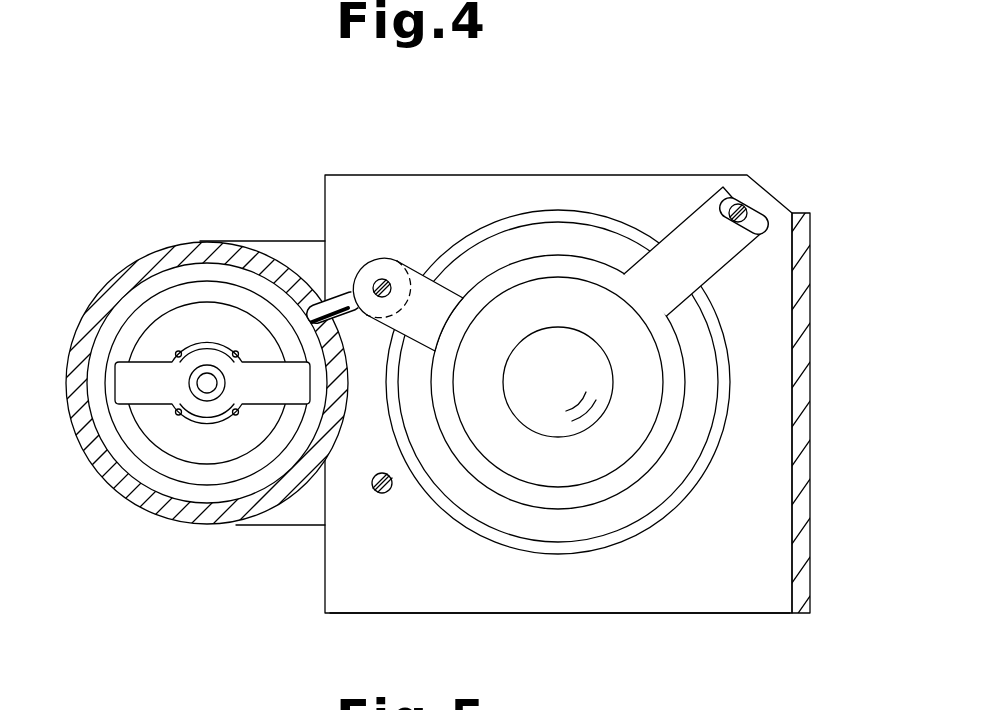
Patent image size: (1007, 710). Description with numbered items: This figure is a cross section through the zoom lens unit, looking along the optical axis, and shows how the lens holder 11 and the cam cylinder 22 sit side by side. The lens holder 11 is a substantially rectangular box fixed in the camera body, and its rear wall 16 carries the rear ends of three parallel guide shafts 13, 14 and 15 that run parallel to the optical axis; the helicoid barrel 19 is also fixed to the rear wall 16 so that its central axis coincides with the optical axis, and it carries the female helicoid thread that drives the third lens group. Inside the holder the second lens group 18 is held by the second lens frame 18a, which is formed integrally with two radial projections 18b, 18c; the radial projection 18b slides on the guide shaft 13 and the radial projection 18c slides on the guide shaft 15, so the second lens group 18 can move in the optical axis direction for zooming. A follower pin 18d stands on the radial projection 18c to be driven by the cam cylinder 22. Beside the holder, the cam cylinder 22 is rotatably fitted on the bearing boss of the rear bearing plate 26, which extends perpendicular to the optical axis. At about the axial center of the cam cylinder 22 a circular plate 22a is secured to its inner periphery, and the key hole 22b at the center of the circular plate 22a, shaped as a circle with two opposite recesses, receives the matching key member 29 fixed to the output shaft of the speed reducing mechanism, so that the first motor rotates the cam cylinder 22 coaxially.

The lens holder 11 is at (600, 420).
The guide shaft 13 is at (746, 206).
The guide shaft 14 is at (381, 494).
The guide shaft 15 is at (383, 278).
The rear wall 16 is at (563, 590).
The second lens group 18 is at (586, 309).
The second lens frame 18a is at (547, 270).
The radial projection 18b is at (698, 250).
The radial projection 18c is at (430, 313).
The follower pin 18d is at (343, 300).
The helicoid barrel 19 is at (792, 457).
The cam cylinder 22 is at (331, 359).
The circular plate 22a is at (250, 330).
The key hole 22b is at (203, 337).
The rear bearing plate 26 is at (298, 508).
The key member 29 is at (142, 390).